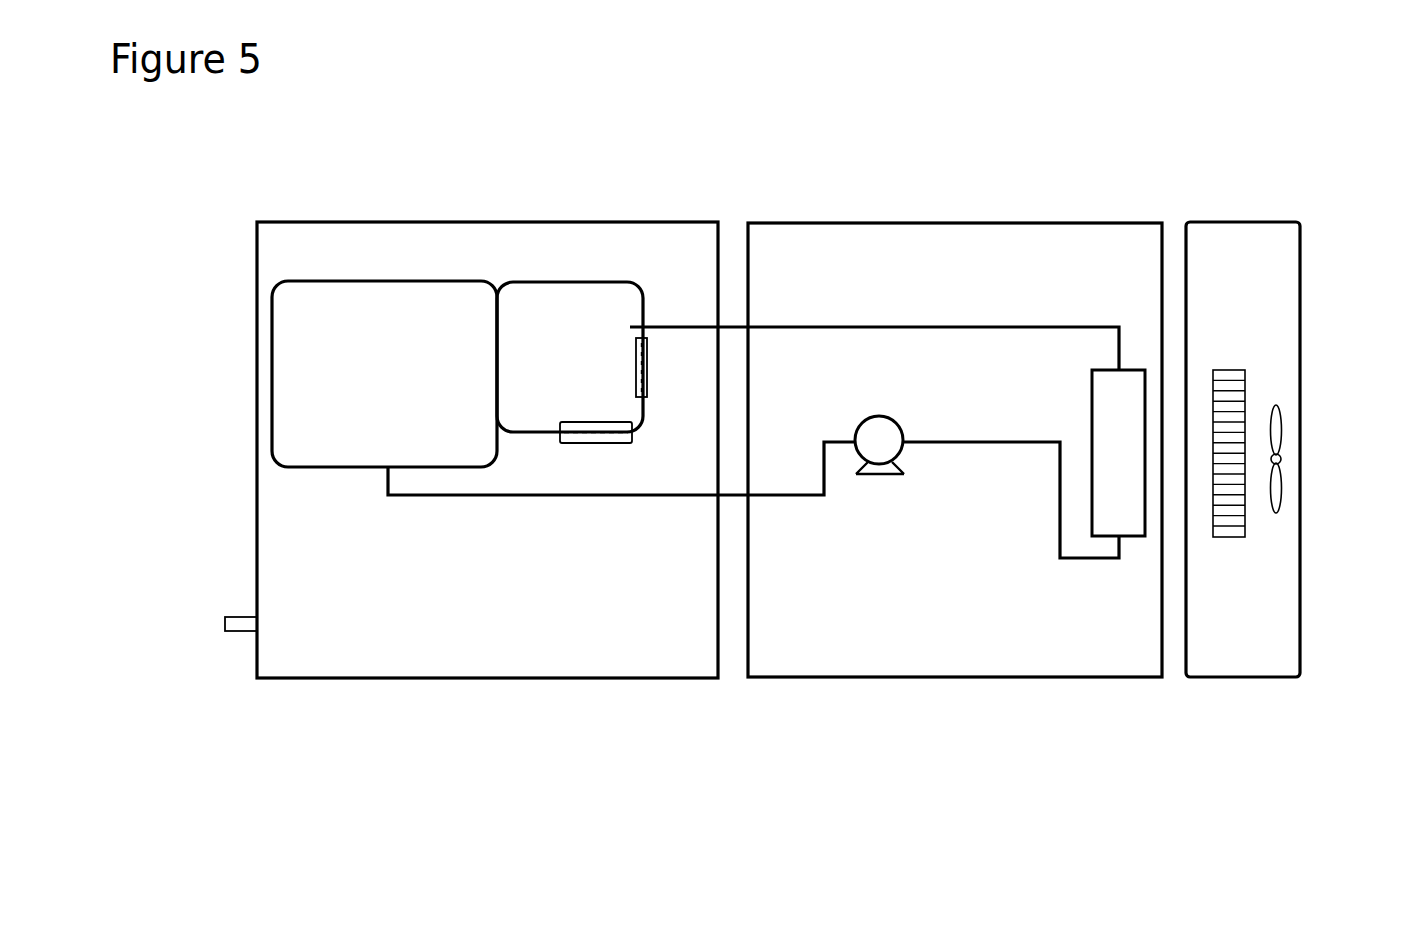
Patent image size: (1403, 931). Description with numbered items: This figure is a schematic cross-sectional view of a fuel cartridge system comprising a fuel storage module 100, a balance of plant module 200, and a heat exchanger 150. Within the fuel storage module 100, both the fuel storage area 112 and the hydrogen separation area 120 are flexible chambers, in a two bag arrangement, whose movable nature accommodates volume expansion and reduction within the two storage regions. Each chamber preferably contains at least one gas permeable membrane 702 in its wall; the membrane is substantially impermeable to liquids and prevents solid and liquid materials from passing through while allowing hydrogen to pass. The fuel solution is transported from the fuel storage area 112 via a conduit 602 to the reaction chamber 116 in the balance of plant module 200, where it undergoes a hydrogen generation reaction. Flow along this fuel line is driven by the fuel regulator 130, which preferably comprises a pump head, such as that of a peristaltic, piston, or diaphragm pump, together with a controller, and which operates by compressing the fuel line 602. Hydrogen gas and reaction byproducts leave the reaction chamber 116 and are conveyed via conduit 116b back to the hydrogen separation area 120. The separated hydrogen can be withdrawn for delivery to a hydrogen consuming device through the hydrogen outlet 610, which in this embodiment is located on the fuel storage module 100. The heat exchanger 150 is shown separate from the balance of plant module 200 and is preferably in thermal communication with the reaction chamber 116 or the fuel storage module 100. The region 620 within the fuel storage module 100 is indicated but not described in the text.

The fuel storage module 100 is at (279, 703).
The fuel storage area 112 is at (325, 339).
The hydrogen separation area 120 is at (567, 315).
The fuel regulator 130 is at (879, 433).
The reaction chamber 116 is at (1132, 527).
The conduit 116b is at (1052, 317).
The heat exchanger 150 is at (1313, 353).
The balance of plant module 200 is at (1132, 188).
The conduit 602 is at (798, 505).
The hydrogen outlet 610 is at (238, 615).
The interior compartment of housing 620 is at (545, 610).
The gas permeable membrane 702 is at (567, 445).